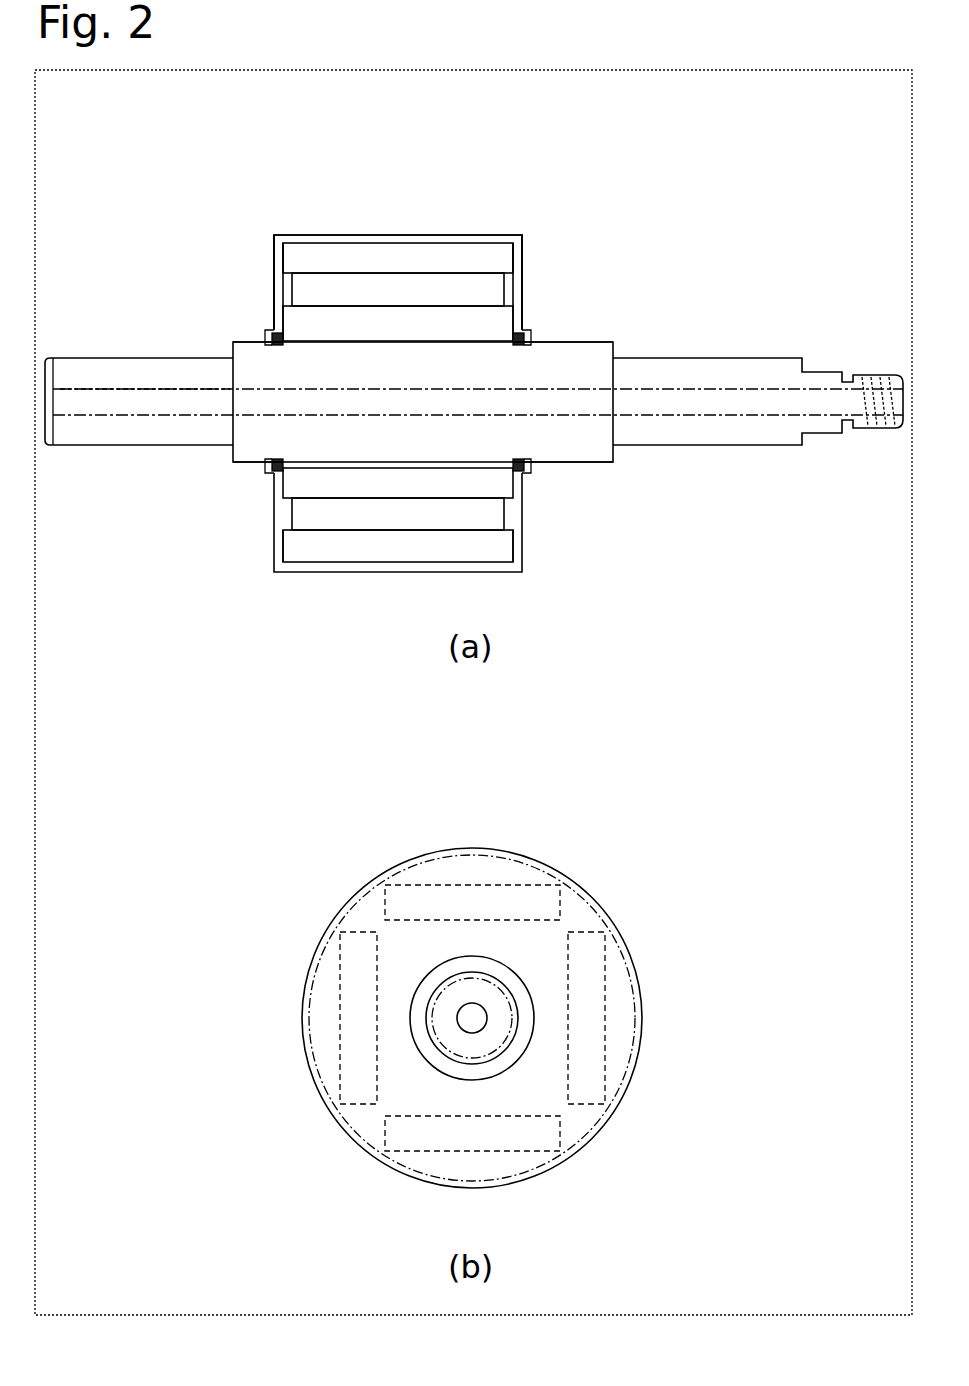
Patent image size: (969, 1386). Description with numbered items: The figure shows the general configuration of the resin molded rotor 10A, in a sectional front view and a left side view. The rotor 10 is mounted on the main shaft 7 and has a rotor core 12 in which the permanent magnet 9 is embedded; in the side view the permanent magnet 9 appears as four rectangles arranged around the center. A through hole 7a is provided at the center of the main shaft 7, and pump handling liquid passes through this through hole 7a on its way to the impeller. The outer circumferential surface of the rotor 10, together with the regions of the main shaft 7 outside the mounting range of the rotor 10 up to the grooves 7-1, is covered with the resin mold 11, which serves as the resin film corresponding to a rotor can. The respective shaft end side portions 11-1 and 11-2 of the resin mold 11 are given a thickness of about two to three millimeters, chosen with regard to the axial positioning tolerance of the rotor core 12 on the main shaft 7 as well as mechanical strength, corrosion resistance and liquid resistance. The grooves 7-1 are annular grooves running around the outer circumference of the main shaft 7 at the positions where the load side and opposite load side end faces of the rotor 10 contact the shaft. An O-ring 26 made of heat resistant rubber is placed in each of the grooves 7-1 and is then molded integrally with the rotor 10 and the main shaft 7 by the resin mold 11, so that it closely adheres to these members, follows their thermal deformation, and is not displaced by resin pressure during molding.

The resin molded rotor 10A is at (428, 152).
The rotor 10 is at (322, 233).
The resin mold 11 is at (394, 233).
The shaft end side portion of the resin mold 11-1 is at (522, 278).
The shaft end side portion of the resin mold 11-2 is at (272, 278).
The permanent magnet 9 is at (466, 287).
The rotor core 12 is at (342, 485).
The O-ring 26 is at (270, 332).
The main shaft 7 is at (595, 352).
The through hole 7a is at (128, 396).
The groove 7-1 is at (276, 350).